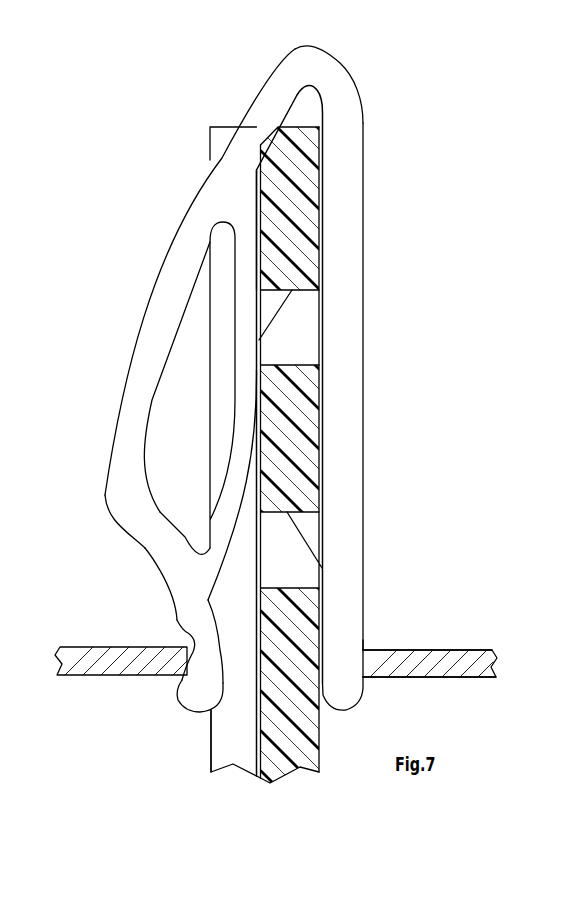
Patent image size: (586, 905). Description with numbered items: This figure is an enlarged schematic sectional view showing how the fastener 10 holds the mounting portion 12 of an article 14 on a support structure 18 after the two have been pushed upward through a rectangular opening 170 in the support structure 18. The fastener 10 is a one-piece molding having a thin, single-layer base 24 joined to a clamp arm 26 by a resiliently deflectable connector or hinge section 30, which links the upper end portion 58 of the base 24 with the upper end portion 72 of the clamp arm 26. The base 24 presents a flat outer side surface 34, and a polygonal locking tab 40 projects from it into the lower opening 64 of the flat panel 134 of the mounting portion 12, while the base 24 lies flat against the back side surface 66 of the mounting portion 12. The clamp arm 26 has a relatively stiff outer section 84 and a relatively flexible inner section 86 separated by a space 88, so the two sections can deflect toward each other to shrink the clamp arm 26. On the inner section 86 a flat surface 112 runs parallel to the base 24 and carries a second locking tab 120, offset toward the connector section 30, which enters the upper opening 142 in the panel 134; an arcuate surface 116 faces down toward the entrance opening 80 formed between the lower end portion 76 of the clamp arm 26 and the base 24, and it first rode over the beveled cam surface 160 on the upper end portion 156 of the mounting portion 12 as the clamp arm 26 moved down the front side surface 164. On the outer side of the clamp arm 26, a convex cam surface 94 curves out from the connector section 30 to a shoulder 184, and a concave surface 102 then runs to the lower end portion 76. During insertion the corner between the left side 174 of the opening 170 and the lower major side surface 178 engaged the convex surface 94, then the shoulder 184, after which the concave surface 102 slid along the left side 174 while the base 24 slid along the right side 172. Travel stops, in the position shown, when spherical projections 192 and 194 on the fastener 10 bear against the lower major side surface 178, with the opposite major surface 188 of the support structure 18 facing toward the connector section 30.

The fastener 10 is at (106, 356).
The mounting portion 12 is at (198, 793).
The article 14 is at (232, 787).
The support structure 18 is at (497, 660).
The base 24 is at (395, 232).
The clamp arm 26 is at (138, 321).
The connector section 30 is at (340, 67).
The outer side surface 34 is at (363, 463).
The locking tab 40 is at (310, 530).
The upper end portion 58 is at (338, 135).
The lower opening 64 is at (280, 547).
The back side surface 66 is at (327, 738).
The upper end portion 72 is at (248, 136).
The lower end portion 76 is at (207, 662).
The entrance opening 80 is at (240, 692).
The outer section 84 is at (187, 250).
The inner section 86 is at (248, 400).
The space 88 is at (185, 405).
The convex surface 94 is at (157, 272).
The concave surface 102 is at (157, 567).
The flat surface 112 is at (256, 193).
The arcuate surface 116 is at (242, 525).
The locking tab 120 is at (273, 302).
The flat panel 134 is at (305, 775).
The upper opening 142 is at (300, 336).
The upper end portion 156 is at (293, 220).
The beveled surface 160 is at (282, 158).
The front side surface 164 is at (258, 743).
The opening 170 is at (185, 663).
The right side 172 is at (363, 650).
The left side 174 is at (190, 655).
The lower major side surface 178 is at (457, 678).
The shoulder 184 is at (130, 493).
The upper panel surface 188 is at (443, 650).
The spherical projection 192 is at (347, 688).
The spherical projection 194 is at (205, 692).